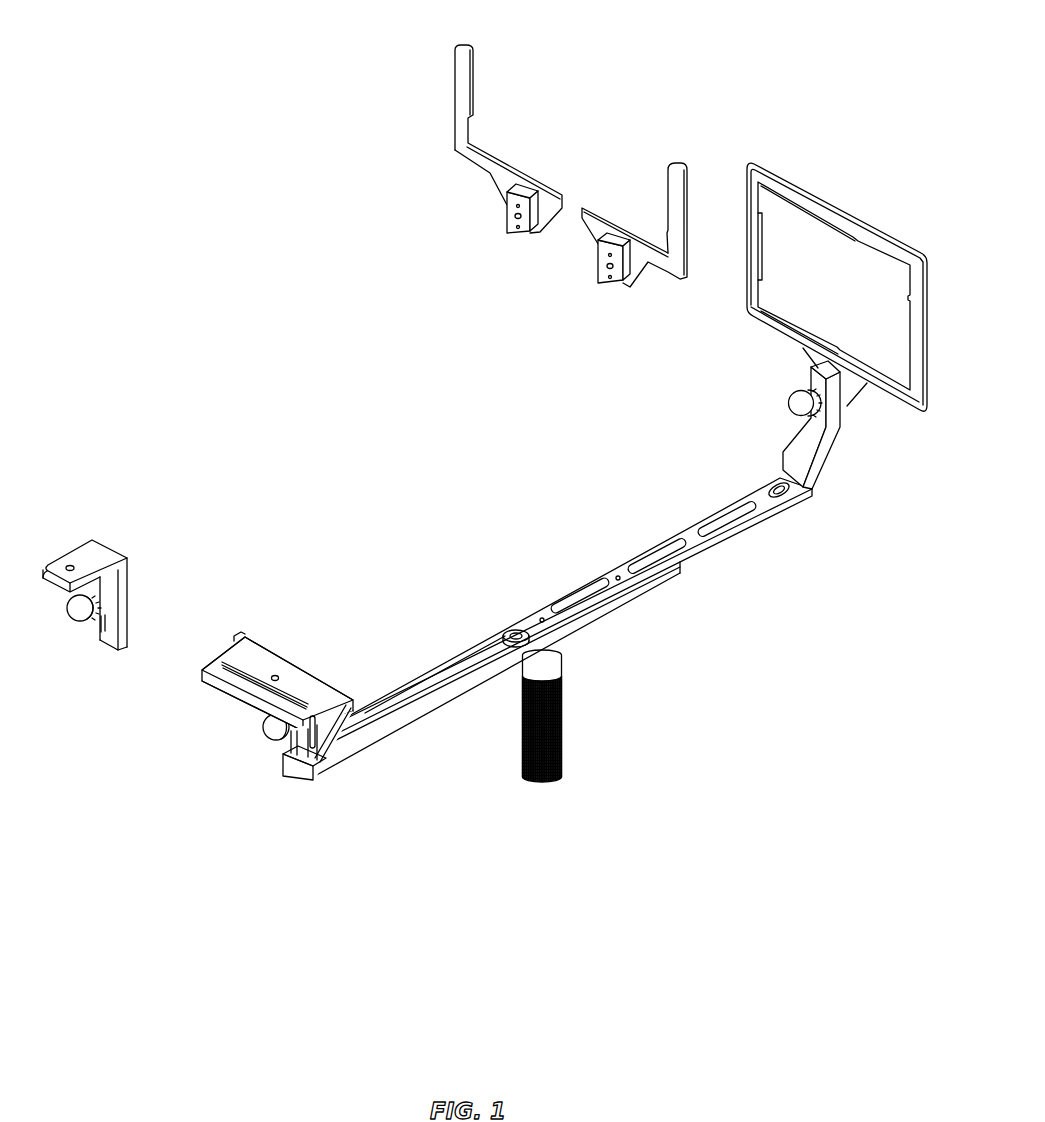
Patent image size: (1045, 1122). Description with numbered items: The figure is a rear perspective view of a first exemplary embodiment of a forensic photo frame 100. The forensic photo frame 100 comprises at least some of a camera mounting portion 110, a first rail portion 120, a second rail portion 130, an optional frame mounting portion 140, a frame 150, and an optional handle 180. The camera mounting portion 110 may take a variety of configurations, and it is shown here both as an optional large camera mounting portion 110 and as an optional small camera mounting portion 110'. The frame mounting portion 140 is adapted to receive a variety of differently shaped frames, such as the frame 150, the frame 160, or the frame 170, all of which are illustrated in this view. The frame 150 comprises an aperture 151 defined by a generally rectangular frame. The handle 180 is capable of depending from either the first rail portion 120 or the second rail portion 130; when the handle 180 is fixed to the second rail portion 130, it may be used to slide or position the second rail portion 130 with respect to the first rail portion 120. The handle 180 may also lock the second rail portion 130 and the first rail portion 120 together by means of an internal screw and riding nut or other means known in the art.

The forensic photo frame 100 is at (248, 130).
The camera mounting portion 110 is at (292, 682).
The small camera mounting portion 110' is at (142, 568).
The first rail portion 120 is at (433, 722).
The second rail portion 130 is at (715, 545).
The frame mounting portion 140 is at (786, 437).
The frame 150 is at (778, 165).
The aperture 151 is at (815, 243).
The frame 160 is at (479, 61).
The frame 170 is at (668, 190).
The handle 180 is at (567, 717).